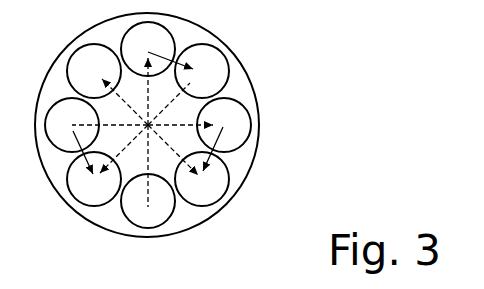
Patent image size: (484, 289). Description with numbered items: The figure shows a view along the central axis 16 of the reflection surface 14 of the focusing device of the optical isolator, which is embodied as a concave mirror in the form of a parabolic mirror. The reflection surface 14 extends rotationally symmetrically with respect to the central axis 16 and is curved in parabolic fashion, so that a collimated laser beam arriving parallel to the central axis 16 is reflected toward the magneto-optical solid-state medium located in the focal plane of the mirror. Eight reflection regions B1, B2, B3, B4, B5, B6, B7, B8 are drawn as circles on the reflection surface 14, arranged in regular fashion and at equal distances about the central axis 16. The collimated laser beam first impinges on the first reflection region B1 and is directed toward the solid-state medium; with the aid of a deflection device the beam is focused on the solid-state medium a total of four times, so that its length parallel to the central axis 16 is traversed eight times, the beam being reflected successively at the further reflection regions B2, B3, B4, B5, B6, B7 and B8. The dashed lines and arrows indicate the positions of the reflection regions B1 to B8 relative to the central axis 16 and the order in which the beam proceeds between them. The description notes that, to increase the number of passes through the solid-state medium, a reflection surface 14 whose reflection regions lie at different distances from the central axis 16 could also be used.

The reflection surface 14 is at (237, 88).
The central axis 16 is at (152, 134).
The first reflection region B1 is at (148, 201).
The reflection region B2 is at (148, 49).
The reflection region B3 is at (202, 71).
The reflection region B4 is at (94, 179).
The reflection region B5 is at (72, 125).
The reflection region B6 is at (224, 125).
The reflection region B7 is at (202, 179).
The reflection region B8 is at (94, 71).